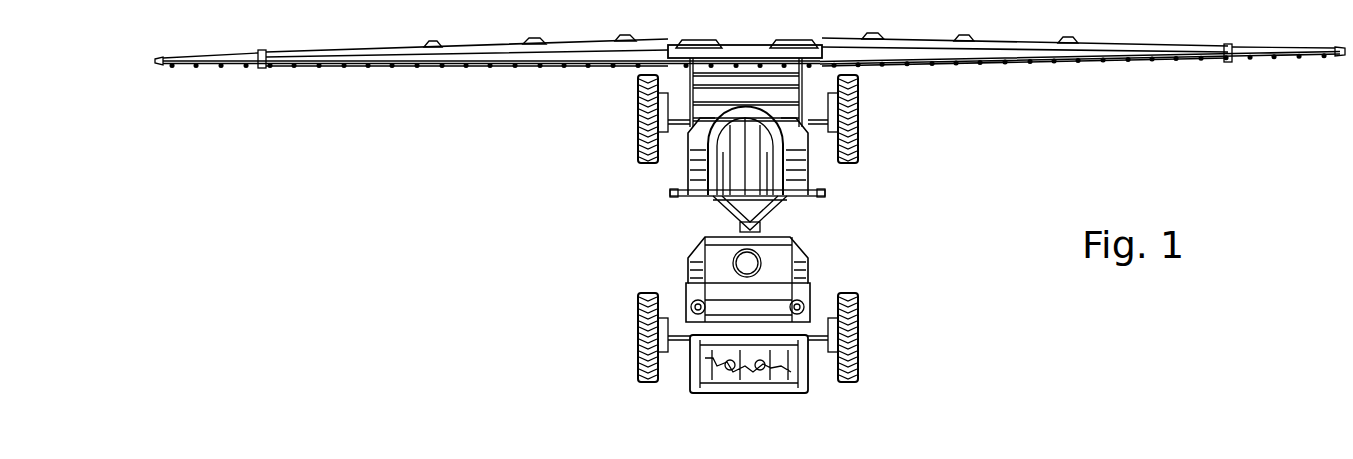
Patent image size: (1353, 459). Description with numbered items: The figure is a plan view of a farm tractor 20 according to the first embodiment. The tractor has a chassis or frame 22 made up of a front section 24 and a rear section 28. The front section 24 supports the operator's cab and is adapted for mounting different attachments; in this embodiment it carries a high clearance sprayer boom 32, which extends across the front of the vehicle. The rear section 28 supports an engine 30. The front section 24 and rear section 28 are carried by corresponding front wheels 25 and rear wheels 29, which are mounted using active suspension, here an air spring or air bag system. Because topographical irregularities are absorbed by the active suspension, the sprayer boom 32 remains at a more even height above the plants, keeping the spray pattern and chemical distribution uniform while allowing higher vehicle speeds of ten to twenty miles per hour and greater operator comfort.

The farm tractor 20 is at (612, 202).
The chassis or frame 22 is at (915, 217).
The front section 24 is at (822, 190).
The front wheels 25 is at (858, 108).
The rear section 28 is at (810, 296).
The rear wheels 29 is at (858, 350).
The engine 30 is at (808, 382).
The high clearance sprayer boom 32 is at (1060, 60).